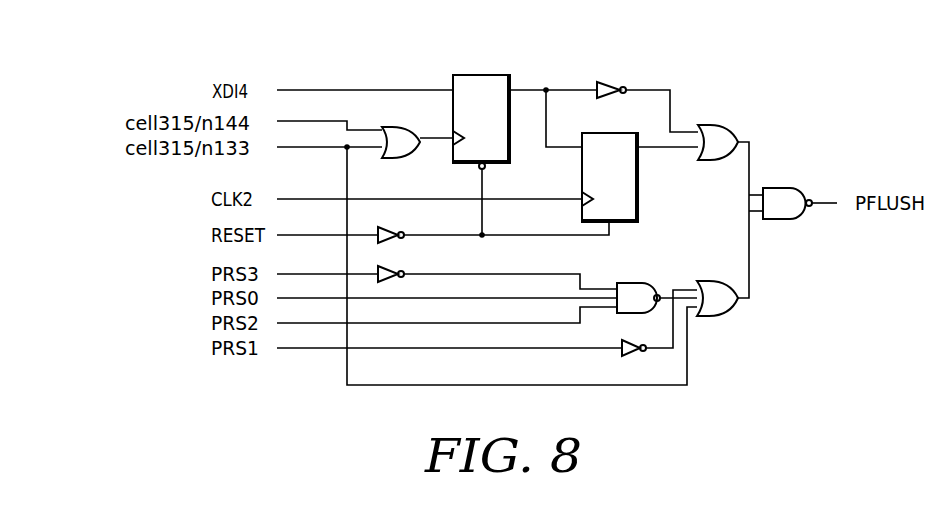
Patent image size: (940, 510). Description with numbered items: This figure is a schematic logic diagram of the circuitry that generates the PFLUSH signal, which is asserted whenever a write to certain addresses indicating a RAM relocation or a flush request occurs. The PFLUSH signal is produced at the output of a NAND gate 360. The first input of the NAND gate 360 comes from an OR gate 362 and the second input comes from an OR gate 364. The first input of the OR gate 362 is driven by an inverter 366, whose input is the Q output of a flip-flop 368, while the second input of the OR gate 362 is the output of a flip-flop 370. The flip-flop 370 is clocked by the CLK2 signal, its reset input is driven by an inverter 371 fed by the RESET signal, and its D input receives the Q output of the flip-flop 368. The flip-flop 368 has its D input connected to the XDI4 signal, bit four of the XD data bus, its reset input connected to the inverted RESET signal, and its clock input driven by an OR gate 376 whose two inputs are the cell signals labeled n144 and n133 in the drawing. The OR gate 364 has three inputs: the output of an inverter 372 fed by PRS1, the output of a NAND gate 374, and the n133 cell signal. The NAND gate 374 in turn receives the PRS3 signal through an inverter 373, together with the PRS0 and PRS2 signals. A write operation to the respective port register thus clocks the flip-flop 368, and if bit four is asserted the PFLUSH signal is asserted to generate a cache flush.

The NAND gate 360 is at (785, 188).
The OR gate 362 is at (719, 125).
The OR gate 364 is at (727, 316).
The inverter 366 is at (608, 82).
The flip-flop 368 is at (481, 75).
The flip-flop 370 is at (637, 223).
The inverter 371 is at (389, 227).
The inverter 372 is at (630, 357).
The inverter 373 is at (389, 266).
The NAND gate 374 is at (633, 283).
The OR gate 376 is at (406, 126).